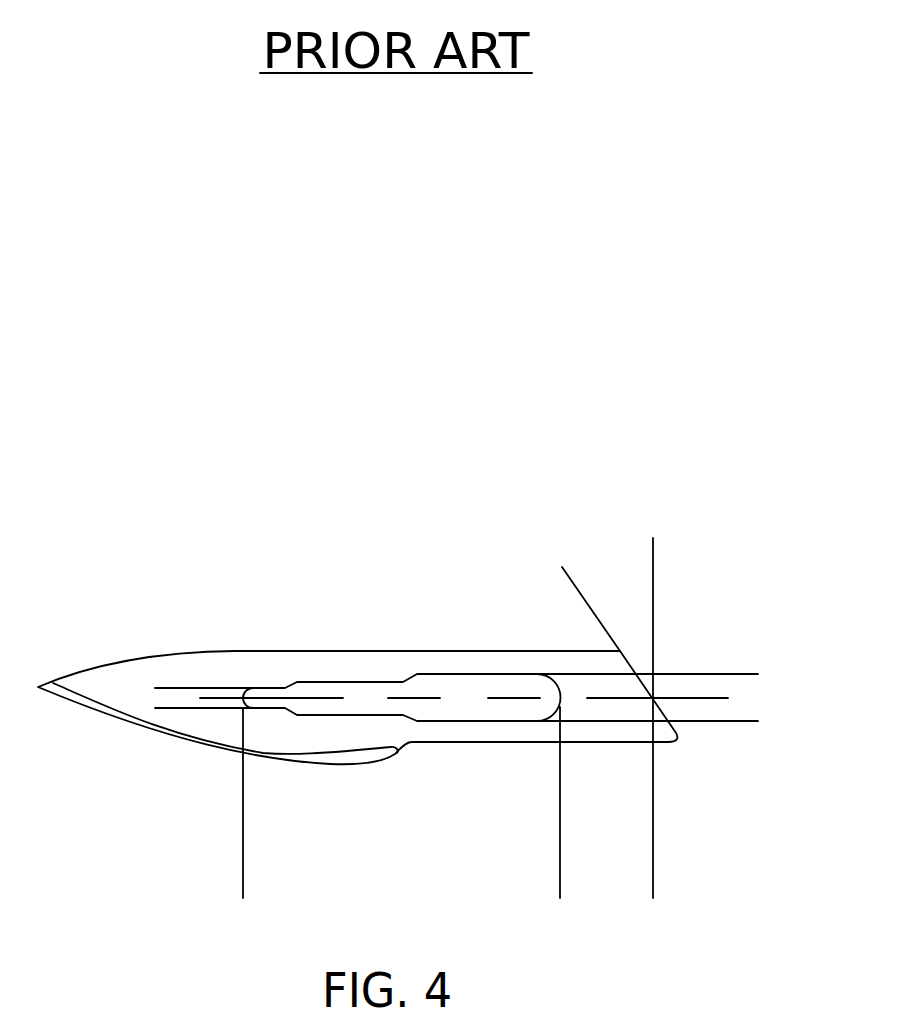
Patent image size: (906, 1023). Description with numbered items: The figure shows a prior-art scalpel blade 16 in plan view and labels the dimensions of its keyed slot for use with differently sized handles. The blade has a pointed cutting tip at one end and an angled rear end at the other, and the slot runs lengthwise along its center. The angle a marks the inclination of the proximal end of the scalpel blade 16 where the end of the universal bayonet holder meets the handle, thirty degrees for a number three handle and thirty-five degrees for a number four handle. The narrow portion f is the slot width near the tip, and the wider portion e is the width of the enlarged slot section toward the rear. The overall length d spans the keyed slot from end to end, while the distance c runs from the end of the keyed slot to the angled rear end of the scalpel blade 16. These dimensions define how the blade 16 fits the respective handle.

The scalpel blade 16 is at (140, 668).
The angle of the end of scalpel blade a is at (578, 588).
The distance between the end of keyed slot and the angled rear end of scalpel blade c is at (560, 871).
The overall length d is at (560, 871).
The wider portion of keyed slot e is at (732, 620).
The narrow portion f is at (183, 633).